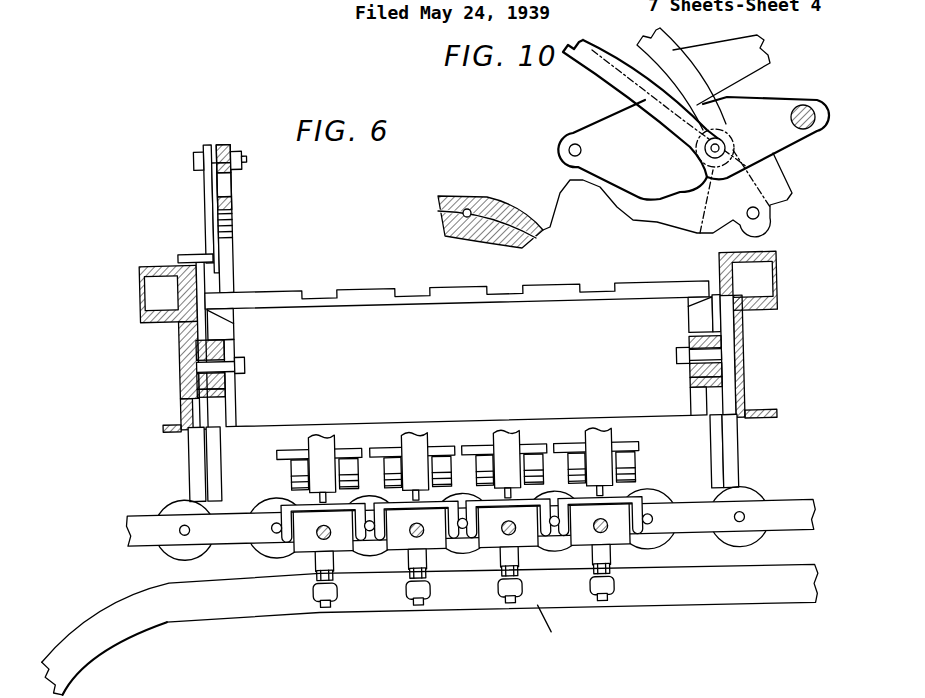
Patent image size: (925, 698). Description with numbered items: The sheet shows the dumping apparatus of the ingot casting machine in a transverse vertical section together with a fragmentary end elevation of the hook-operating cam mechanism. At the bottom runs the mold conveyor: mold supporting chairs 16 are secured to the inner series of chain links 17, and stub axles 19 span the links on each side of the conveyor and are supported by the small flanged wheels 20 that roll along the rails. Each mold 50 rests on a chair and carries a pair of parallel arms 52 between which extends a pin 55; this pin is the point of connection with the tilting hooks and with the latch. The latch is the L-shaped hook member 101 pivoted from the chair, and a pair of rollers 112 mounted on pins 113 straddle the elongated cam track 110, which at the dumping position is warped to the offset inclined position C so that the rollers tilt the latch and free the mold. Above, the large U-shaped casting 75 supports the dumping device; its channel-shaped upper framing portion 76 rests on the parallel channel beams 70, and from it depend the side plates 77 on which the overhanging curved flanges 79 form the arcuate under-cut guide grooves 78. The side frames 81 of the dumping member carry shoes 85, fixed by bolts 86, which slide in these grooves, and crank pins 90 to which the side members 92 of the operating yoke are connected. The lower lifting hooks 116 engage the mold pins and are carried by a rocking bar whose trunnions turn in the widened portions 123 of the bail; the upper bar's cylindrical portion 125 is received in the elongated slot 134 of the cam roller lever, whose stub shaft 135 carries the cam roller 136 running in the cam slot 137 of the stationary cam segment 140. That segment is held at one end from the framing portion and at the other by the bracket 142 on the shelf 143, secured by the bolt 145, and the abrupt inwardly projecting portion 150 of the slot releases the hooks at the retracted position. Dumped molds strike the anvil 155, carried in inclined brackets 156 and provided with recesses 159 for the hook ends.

In FIG. 6, the mold supporting chair 16 is at (292, 503).
In FIG. 6, the inner series of chain links 17 is at (702, 520).
In FIG. 6, the stub axle 19 is at (771, 487).
In FIG. 6, the small flanged wheel 20 is at (185, 560).
In FIG. 6, the mold 50 is at (378, 440).
In FIG. 6, the parallel arm 52 is at (442, 450).
In FIG. 6, the pin 55 is at (290, 470).
In FIG. 6, the channel beam 70 is at (178, 403).
In FIG. 6, the U-shaped casting 75 is at (790, 275).
In FIG. 6, the upper framing portion 76 is at (140, 281).
In FIG. 6, the side plate 77 is at (193, 440).
In FIG. 6, the guide groove 78 is at (203, 400).
In FIG. 6, the curved flange 79 is at (213, 397).
In FIG. 6, the side frame 81 is at (210, 357).
In FIG. 10, the side frame 81 is at (680, 213).
In FIG. 6, the shoe 85 is at (203, 357).
In FIG. 10, the shoe 85 is at (440, 222).
In FIG. 6, the bolt 86 is at (203, 373).
In FIG. 10, the bolt 86 is at (467, 209).
In FIG. 10, the crank pin 90 is at (558, 152).
In FIG. 10, the side member of the yoke 92 is at (628, 118).
In FIG. 6, the hook member 101 is at (322, 557).
In FIG. 6, the cam track 110 is at (750, 592).
In FIG. 6, the roller 112 is at (317, 583).
In FIG. 6, the pin 113 is at (413, 572).
In FIG. 6, the lower lifting hook 116 is at (320, 437).
In FIG. 10, the widened portion 123 is at (772, 218).
In FIG. 10, the cylindrical portion 125 is at (775, 123).
In FIG. 10, the elongated slot 134 is at (700, 233).
In FIG. 10, the stub shaft 135 is at (710, 153).
In FIG. 10, the cam roller 136 is at (705, 146).
In FIG. 6, the cam slot 137 is at (230, 183).
In FIG. 10, the cam slot 137 is at (640, 62).
In FIG. 6, the cam segment 140 is at (235, 230).
In FIG. 10, the cam segment 140 is at (673, 52).
In FIG. 6, the bracket 142 is at (210, 220).
In FIG. 6, the shelf 143 is at (220, 267).
In FIG. 6, the bolt 145 is at (243, 155).
In FIG. 10, the inwardly projecting portion 150 is at (740, 95).
In FIG. 6, the anvil 155 is at (357, 323).
In FIG. 6, the inclined bracket 156 is at (222, 330).
In FIG. 6, the recess 159 is at (313, 290).
In FIG. 6, the offset inclined position C is at (552, 629).